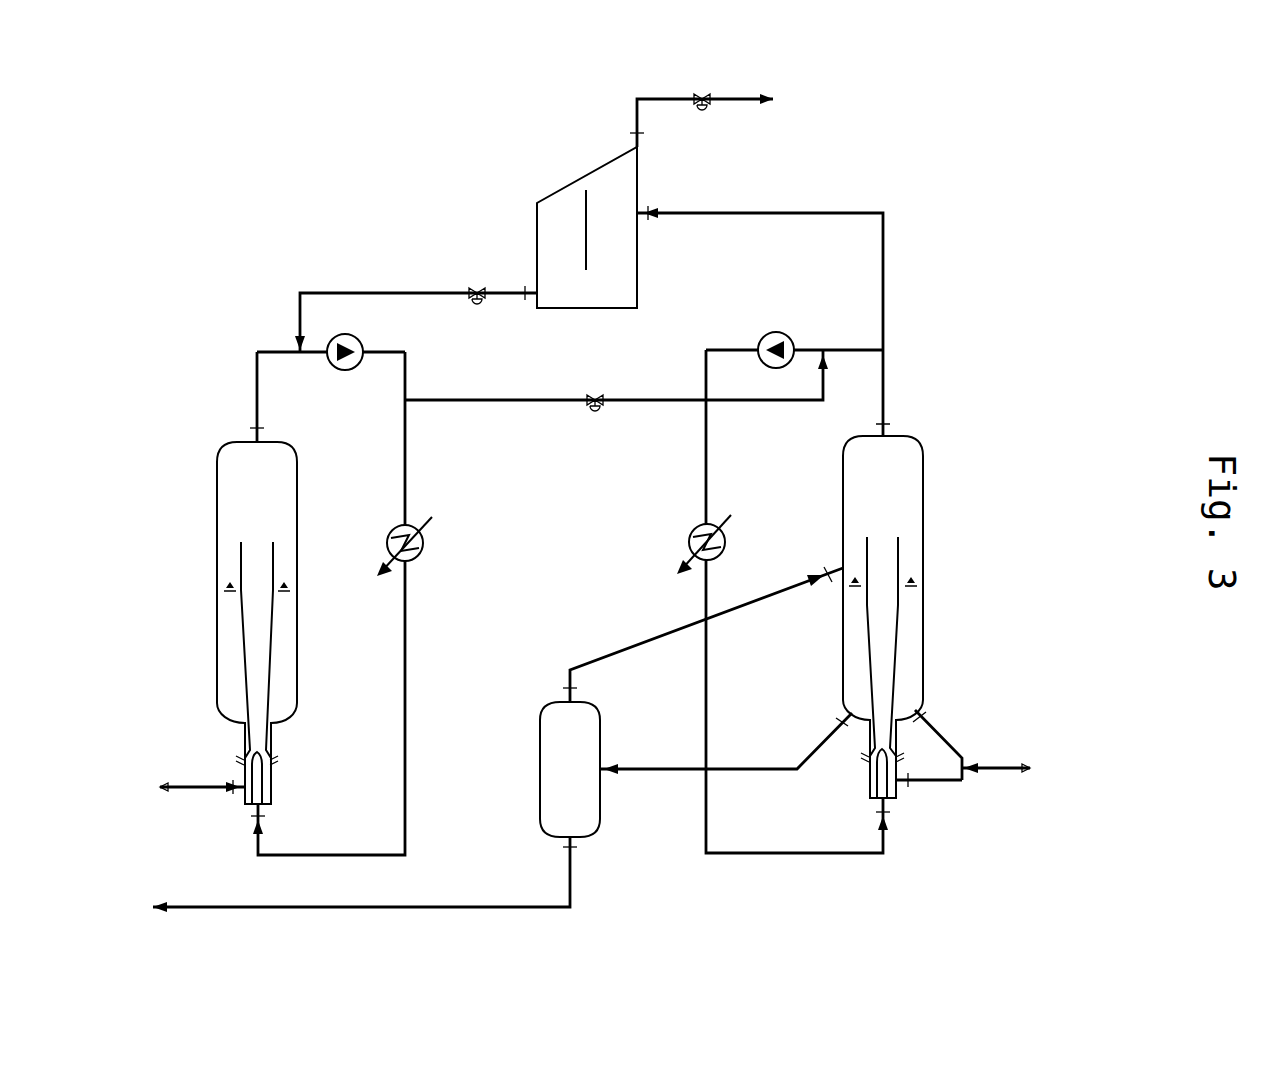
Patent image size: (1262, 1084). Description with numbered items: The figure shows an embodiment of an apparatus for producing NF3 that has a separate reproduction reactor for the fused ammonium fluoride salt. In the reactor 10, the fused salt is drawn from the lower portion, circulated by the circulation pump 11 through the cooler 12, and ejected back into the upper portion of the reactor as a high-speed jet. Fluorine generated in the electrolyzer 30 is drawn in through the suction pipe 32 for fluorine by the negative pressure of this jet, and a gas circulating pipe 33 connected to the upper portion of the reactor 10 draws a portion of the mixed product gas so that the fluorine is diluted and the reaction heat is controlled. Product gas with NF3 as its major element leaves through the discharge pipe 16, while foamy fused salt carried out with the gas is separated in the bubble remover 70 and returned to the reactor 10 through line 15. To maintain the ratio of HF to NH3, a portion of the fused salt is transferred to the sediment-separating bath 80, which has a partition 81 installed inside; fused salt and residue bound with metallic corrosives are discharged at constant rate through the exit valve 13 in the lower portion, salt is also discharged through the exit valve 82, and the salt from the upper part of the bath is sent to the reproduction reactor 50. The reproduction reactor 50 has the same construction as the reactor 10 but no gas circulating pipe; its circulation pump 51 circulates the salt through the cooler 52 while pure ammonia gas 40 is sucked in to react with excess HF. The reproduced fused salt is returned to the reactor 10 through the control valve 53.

The reactor 10 is at (923, 555).
The circulation pump 11 is at (773, 332).
The cooler 12 is at (692, 532).
The exit valve for fused ammonium fluoride salt 13 is at (700, 93).
The recirculation line 15 is at (793, 853).
The discharge pipe 16 is at (348, 878).
The electrolyzer for fluorine 30 is at (1013, 768).
The suction pipe for fluorine 32 is at (935, 780).
The gas circulating pipe 33 is at (945, 740).
The ammonia gas 40 is at (182, 787).
The reproduction reactor 50 is at (217, 555).
The circulation pump 51 is at (345, 370).
The cooler 52 is at (417, 558).
The control valve 53 is at (593, 405).
The bubble remover 70 is at (540, 769).
The sediment-separating bath 80 is at (537, 215).
The partition 81 is at (586, 207).
The exit valve 82 is at (475, 287).